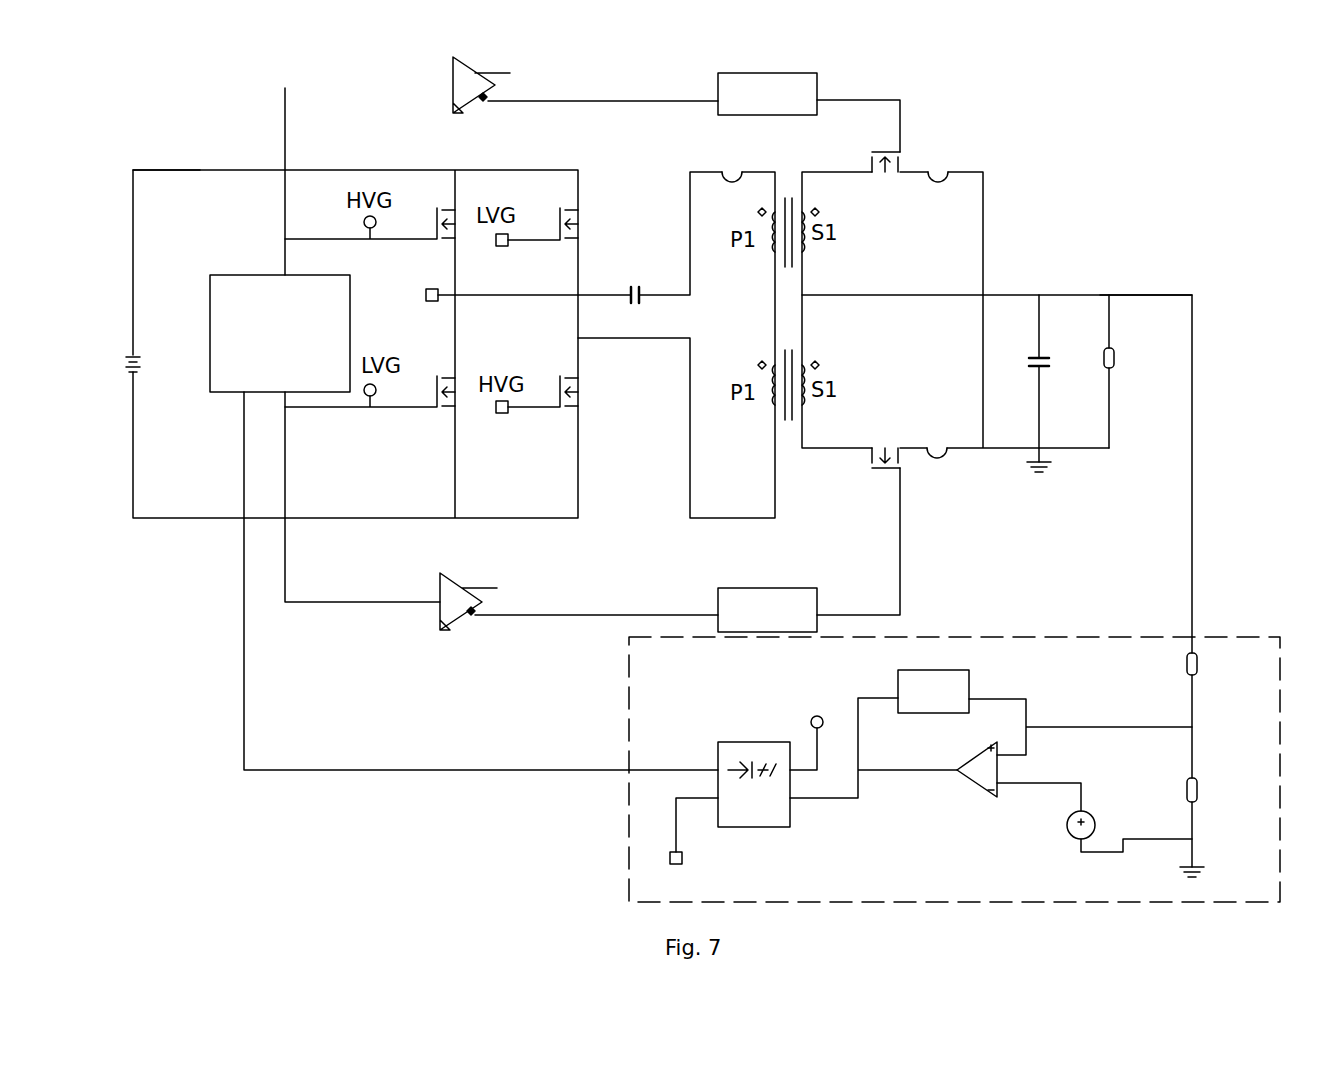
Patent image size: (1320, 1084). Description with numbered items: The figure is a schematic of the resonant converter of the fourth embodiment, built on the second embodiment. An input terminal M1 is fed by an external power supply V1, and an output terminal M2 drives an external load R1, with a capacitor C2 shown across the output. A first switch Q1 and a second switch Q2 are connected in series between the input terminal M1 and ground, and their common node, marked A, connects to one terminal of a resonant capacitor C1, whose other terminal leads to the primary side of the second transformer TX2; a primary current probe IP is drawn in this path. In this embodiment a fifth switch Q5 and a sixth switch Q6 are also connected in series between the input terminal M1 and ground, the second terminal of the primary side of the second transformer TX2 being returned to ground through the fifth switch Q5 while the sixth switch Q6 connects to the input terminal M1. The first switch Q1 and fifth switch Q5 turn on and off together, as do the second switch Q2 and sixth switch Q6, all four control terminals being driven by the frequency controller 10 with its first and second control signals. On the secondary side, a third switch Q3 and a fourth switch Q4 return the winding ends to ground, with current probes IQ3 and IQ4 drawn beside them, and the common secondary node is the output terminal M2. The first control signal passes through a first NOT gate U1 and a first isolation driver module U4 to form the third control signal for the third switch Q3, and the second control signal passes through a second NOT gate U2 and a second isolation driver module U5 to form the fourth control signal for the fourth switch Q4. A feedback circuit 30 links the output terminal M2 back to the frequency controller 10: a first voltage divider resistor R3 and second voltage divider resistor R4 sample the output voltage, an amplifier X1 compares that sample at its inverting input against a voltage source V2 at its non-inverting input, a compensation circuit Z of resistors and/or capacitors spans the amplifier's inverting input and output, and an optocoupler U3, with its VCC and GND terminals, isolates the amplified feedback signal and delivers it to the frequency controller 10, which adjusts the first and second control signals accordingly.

The frequency controller 10 is at (225, 275).
The feedback circuit 30 is at (1110, 642).
The first NOT gate U1 is at (585, 77).
The second NOT gate U2 is at (579, 594).
The optocoupler U3 is at (729, 783).
The first isolation driver module U4 is at (809, 99).
The second isolation driver module U5 is at (809, 550).
The first switch Q1 is at (370, 237).
The second switch Q2 is at (370, 406).
The third switch Q3 is at (864, 152).
The fourth switch Q4 is at (862, 462).
The fifth switch Q5 is at (537, 406).
The sixth switch Q6 is at (537, 237).
The resonant capacitor C1 is at (630, 307).
The capacitor C2 is at (1054, 411).
The external load R1 is at (1127, 349).
The first voltage divider resistor R3 is at (1209, 658).
The second voltage divider resistor R4 is at (1209, 785).
The external power supply V1 is at (148, 349).
The voltage source V2 is at (1099, 820).
The second transformer TX2 is at (816, 305).
The amplifier X1 is at (977, 783).
The compensation circuit Z is at (933, 691).
The primary current probe IP is at (732, 161).
The current probe IQ3 is at (938, 162).
The current probe IQ4 is at (931, 439).
The node A is at (420, 295).
The input terminal M1 is at (164, 157).
The output terminal M2 is at (1143, 282).
The supply terminal VCC is at (795, 707).
The ground terminal GND is at (667, 873).